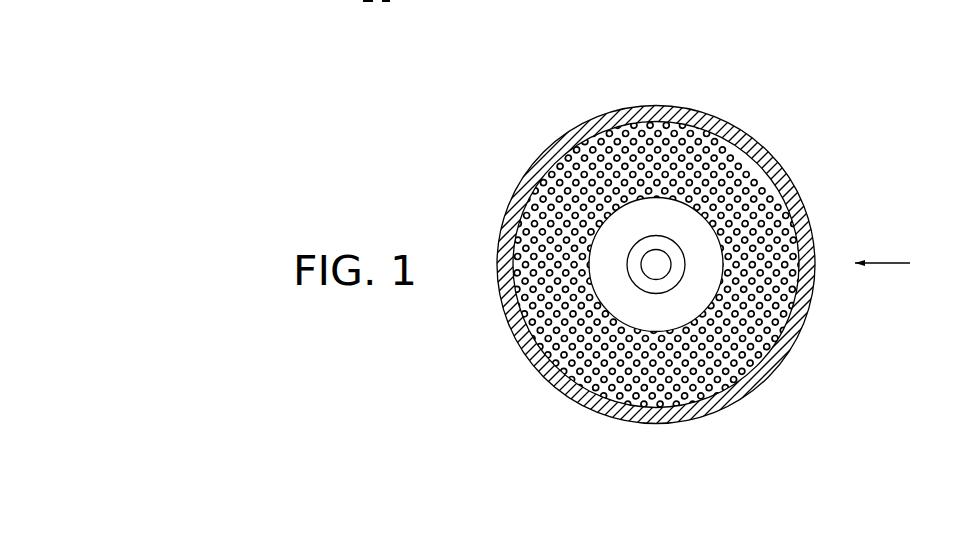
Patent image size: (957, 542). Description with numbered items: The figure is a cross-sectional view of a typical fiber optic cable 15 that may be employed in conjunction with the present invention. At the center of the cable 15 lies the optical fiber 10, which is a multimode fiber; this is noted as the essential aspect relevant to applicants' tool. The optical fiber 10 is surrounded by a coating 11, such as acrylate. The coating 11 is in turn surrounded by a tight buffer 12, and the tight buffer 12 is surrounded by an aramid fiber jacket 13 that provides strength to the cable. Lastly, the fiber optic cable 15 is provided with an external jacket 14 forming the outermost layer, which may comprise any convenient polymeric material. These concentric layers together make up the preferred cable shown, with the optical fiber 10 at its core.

The central core 10 is at (656, 265).
The inner layer surrounding core 11 is at (682, 236).
The intermediate layer 12 is at (732, 242).
The particle-filled layer 13 is at (757, 304).
The outer jacket 14 is at (773, 382).
The radial direction arrow 15 is at (899, 264).